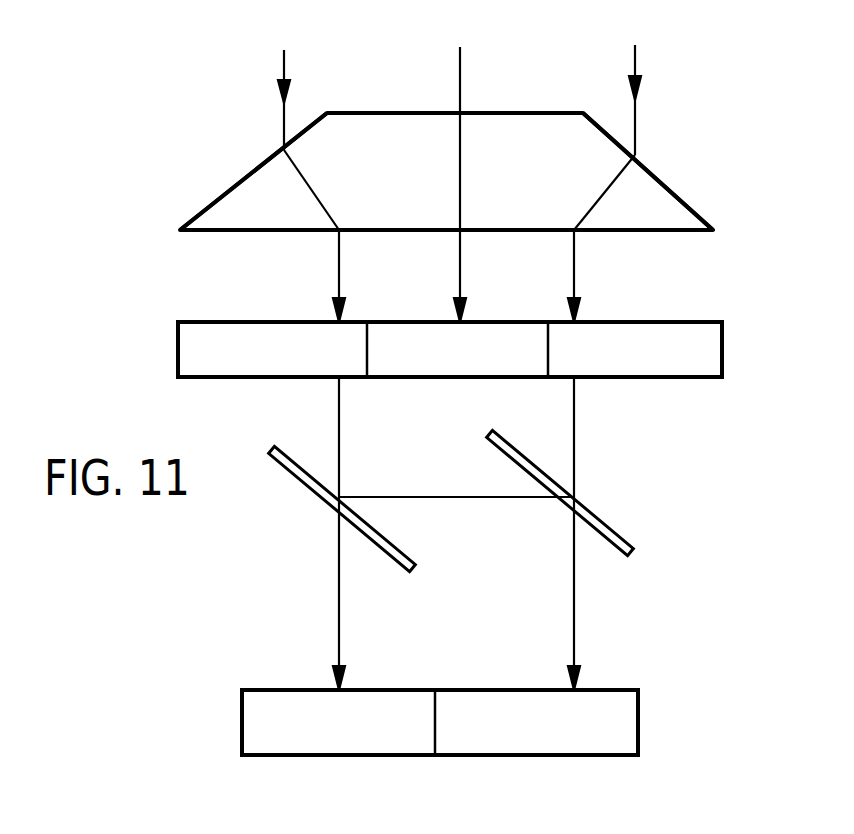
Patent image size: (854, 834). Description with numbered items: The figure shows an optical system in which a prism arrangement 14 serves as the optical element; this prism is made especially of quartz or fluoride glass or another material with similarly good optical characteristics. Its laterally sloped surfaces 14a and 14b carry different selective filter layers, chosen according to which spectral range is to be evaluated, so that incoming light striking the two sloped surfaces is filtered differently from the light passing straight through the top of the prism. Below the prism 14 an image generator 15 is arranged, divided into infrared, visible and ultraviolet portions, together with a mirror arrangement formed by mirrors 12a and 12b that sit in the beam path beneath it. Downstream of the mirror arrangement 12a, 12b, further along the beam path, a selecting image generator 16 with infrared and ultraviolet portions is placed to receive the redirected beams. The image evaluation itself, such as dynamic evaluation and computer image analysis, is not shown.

The prism arrangement 14 is at (522, 112).
The laterally sloped surface 14a is at (230, 190).
The laterally sloped surface 14b is at (662, 180).
The image generator 15 is at (178, 353).
The mirror 12a is at (300, 485).
The mirror 12b is at (602, 518).
The selecting image generator 16 is at (242, 722).